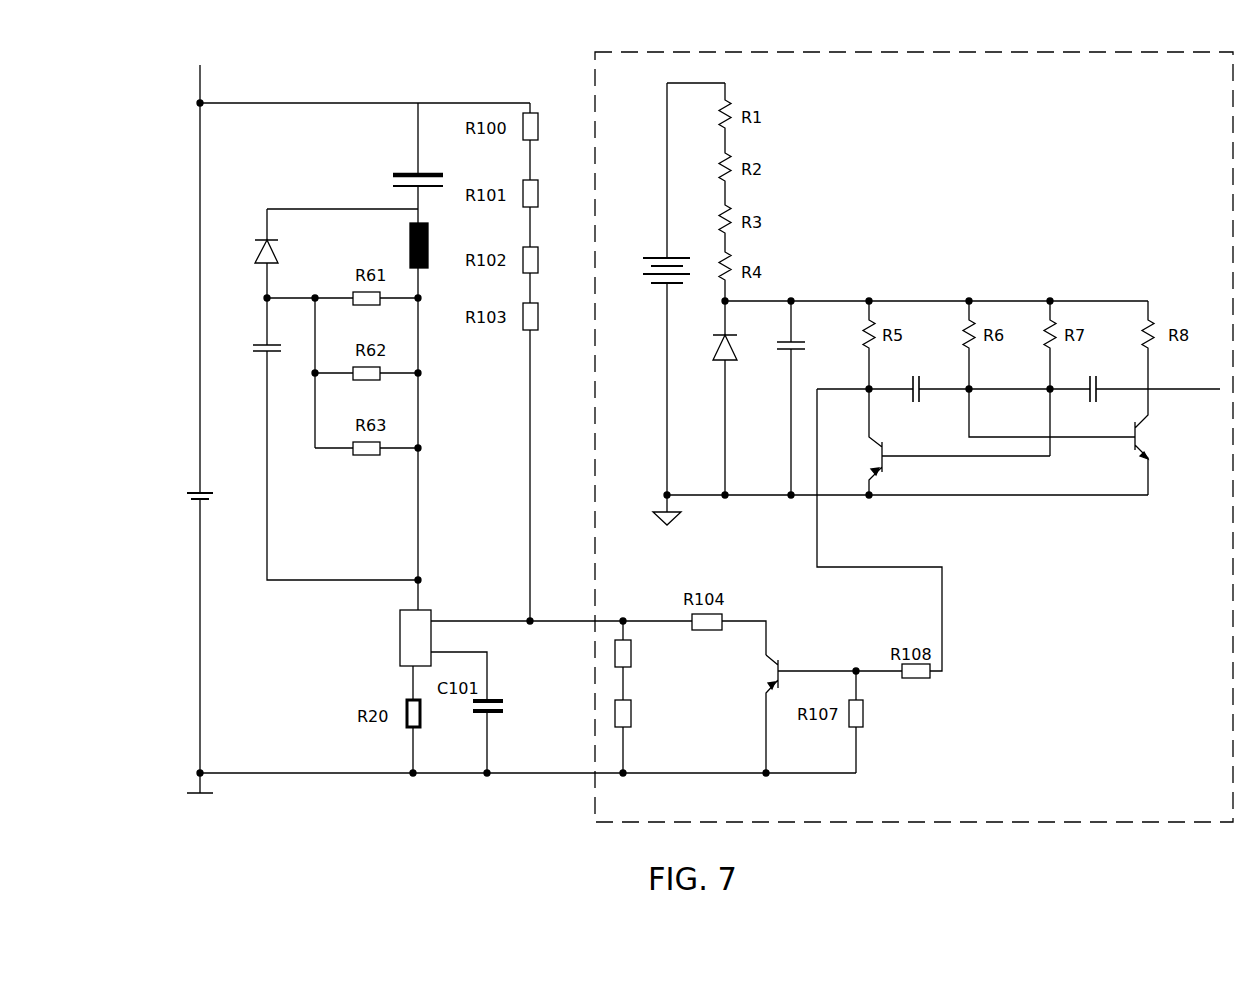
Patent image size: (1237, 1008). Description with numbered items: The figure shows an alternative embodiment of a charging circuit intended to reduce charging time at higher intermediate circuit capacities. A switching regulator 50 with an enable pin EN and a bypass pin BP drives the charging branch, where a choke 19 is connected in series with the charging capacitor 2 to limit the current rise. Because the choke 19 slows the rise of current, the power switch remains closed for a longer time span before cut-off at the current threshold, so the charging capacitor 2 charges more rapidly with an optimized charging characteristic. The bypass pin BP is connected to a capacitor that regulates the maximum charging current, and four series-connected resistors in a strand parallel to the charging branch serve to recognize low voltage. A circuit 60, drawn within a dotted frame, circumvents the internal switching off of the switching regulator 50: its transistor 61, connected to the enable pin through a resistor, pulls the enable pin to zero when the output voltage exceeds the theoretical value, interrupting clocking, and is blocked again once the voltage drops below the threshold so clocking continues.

The charging capacitor 2 is at (427, 173).
The choke 19 is at (410, 228).
The switching regulator 50 is at (392, 637).
The circuit 60 is at (916, 822).
The transistor 61 is at (777, 655).